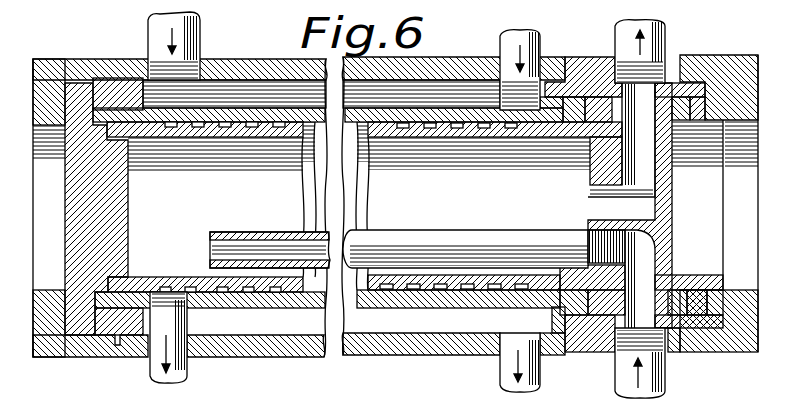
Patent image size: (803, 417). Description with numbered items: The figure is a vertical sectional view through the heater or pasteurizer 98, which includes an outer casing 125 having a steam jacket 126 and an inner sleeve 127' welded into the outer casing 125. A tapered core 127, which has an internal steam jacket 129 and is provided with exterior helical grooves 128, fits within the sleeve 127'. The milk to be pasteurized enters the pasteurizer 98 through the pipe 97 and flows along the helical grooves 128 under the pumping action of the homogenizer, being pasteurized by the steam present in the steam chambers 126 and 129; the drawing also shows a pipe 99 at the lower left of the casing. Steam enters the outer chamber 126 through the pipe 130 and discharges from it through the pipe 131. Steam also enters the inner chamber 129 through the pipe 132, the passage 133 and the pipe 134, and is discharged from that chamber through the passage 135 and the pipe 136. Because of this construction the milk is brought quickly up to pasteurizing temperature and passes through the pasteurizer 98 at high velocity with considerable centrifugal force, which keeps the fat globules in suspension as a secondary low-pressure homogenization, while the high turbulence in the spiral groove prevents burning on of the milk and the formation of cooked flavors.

The pipe 97 is at (540, 42).
The pasteurizer 98 is at (296, 363).
The outlet pipe 99 is at (187, 373).
The outer casing 125 is at (380, 352).
The steam jacket 126 is at (243, 95).
The tapered core 127 is at (366, 207).
The sleeve 127' is at (249, 315).
The helical grooves 128 is at (190, 286).
The internal steam jacket 129 is at (262, 203).
The pipe 130 is at (148, 33).
The pipe 131 is at (540, 376).
The pipe 132 is at (665, 370).
The passage 133 is at (648, 258).
The pipe 134 is at (405, 240).
The passage 135 is at (643, 168).
The pipe 136 is at (665, 30).